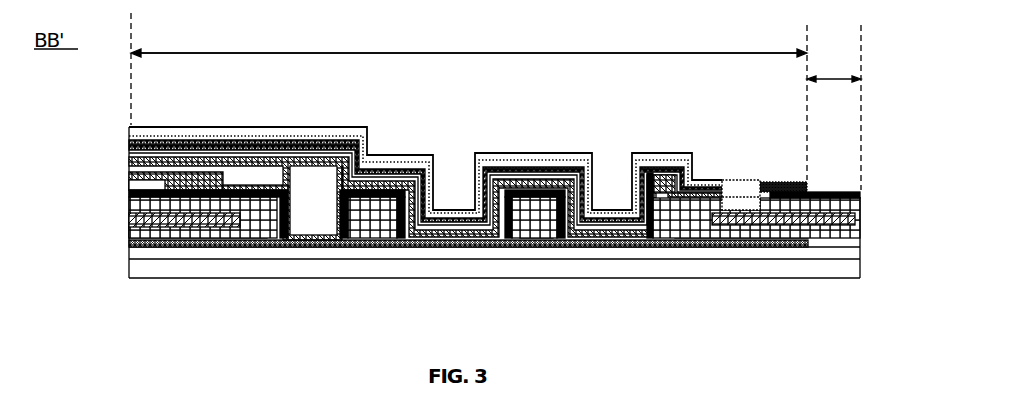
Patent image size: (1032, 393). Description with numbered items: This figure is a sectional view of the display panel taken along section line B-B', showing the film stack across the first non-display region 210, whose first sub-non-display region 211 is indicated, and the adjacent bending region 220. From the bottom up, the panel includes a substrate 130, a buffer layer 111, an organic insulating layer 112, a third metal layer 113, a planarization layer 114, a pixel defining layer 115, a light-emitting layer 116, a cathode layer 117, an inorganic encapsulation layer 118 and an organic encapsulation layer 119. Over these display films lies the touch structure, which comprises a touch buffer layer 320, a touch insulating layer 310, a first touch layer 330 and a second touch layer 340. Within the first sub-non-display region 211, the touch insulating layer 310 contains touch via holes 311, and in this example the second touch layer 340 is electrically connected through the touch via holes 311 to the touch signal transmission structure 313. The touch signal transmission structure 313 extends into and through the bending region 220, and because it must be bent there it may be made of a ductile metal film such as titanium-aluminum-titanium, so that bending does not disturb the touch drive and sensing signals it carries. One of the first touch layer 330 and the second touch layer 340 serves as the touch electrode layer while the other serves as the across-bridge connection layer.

The first non-display region 210 is at (469, 96).
The first sub-non-display region 211 is at (469, 35).
The bending region 220 is at (834, 107).
The substrate 130 is at (128, 276).
The buffer layer 111 is at (128, 261).
The organic insulating layer 112 is at (888, 240).
The third metal layer 113 is at (128, 223).
The touch signal transmission structure 313 is at (862, 218).
The planarization layer 114 is at (373, 217).
The pixel defining layer 115 is at (128, 196).
The light-emitting layer 116 is at (128, 192).
The cathode layer 117 is at (128, 182).
The inorganic encapsulation layer 118 is at (128, 163).
The organic encapsulation layer 119 is at (137, 168).
The touch insulating layer 310 is at (128, 131).
The touch via holes 311 is at (733, 180).
The touch buffer layer 320 is at (128, 148).
The first touch layer 330 is at (193, 143).
The second touch layer 340 is at (222, 133).